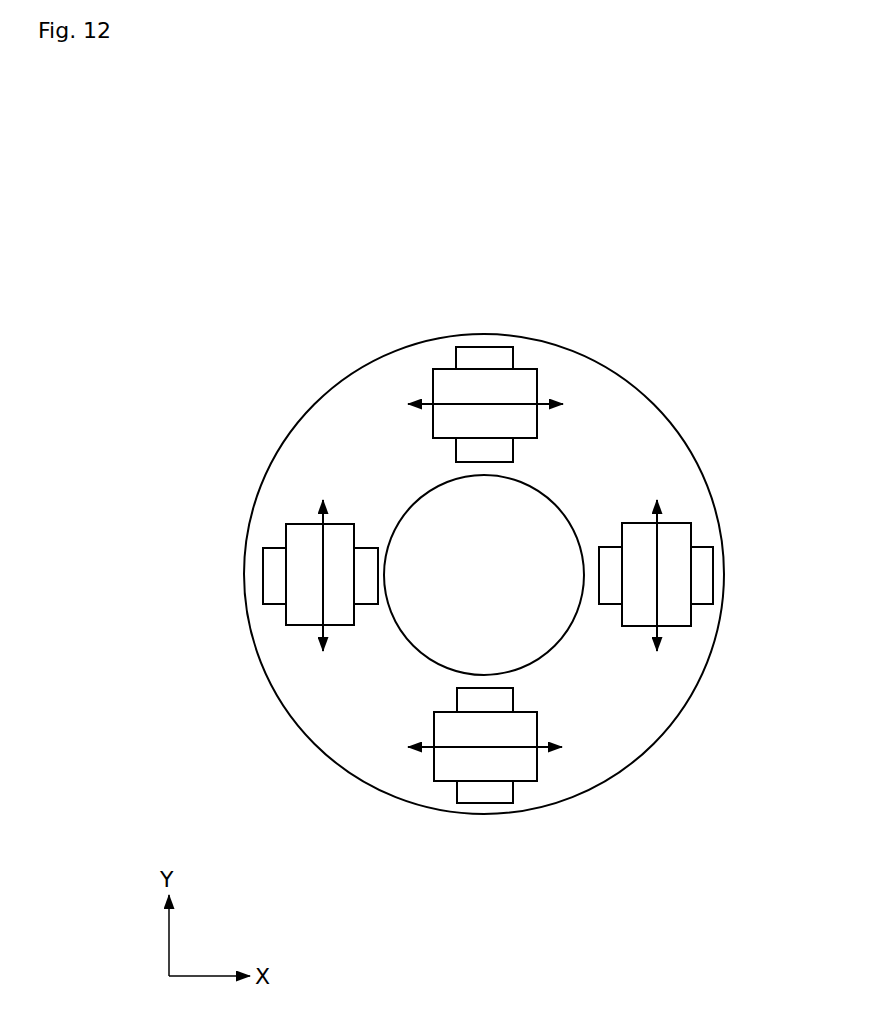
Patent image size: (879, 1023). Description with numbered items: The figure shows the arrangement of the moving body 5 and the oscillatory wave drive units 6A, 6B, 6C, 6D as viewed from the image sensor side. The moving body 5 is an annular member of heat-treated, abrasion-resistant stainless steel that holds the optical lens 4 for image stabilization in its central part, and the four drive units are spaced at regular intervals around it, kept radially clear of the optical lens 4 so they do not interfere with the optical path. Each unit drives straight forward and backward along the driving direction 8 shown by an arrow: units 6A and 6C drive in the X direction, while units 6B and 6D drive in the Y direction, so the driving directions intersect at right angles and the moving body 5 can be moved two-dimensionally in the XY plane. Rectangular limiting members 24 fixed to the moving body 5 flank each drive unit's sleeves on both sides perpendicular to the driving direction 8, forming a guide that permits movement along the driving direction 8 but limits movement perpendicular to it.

The optical lens 4 is at (540, 508).
The moving body 5 is at (307, 431).
The oscillatory wave drive unit 6A is at (522, 378).
The oscillatory wave drive unit 6B is at (675, 627).
The oscillatory wave drive unit 6C is at (443, 765).
The oscillatory wave drive unit 6D is at (298, 530).
The driving direction 8 is at (657, 578).
The limiting member 24 is at (466, 450).